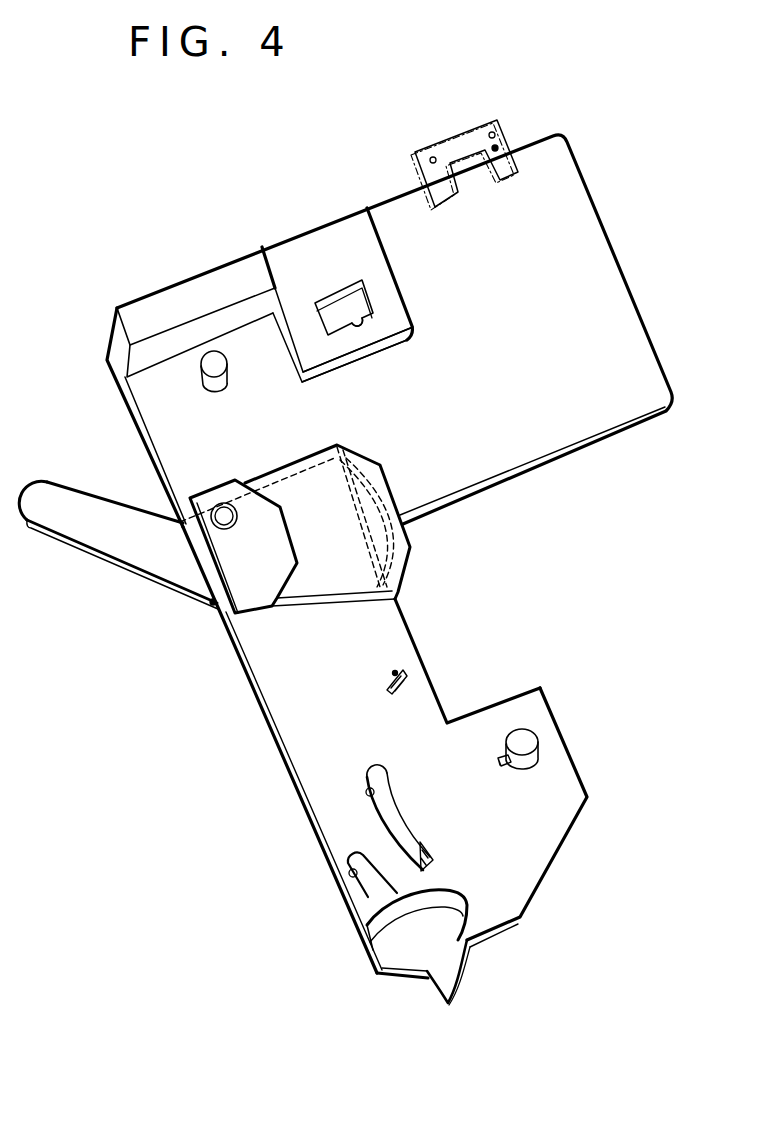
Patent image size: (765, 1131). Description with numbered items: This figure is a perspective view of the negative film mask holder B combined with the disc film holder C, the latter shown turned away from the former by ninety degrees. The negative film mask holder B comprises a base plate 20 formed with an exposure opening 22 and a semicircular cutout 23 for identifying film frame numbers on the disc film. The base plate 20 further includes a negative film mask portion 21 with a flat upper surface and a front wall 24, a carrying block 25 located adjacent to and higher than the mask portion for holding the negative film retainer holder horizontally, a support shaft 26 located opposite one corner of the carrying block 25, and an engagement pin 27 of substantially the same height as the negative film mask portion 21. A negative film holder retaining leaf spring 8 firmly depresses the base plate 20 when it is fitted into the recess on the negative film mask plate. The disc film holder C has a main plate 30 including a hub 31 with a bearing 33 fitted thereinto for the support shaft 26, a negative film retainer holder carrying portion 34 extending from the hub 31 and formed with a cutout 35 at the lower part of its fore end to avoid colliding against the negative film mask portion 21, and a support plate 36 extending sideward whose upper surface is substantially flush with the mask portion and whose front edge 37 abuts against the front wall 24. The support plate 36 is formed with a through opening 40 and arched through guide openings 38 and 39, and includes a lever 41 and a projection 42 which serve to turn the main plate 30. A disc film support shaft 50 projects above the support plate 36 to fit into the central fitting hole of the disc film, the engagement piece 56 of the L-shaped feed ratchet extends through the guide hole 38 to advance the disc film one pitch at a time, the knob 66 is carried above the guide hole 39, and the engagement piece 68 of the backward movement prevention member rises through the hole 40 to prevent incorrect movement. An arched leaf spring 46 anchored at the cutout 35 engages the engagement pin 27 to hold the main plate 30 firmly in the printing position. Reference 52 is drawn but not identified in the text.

The negative film holder retaining leaf spring 8 is at (475, 127).
The base plate 20 is at (600, 252).
The negative film mask holder B is at (392, 331).
The negative film mask portion 21 is at (358, 276).
The exposure opening 22 is at (345, 305).
The semicircular cutout 23 is at (360, 330).
The front wall 24 is at (400, 337).
The carrying block 25 is at (208, 273).
The support shaft 26 is at (222, 508).
The engagement pin 27 is at (205, 378).
The main plate 30 is at (394, 774).
The disc film holder C is at (394, 774).
The hub 31 is at (233, 550).
The bearing 33 is at (228, 529).
The negative film retainer holder carrying portion 34 is at (320, 503).
The cutout 35 is at (329, 468).
The support plate 36 is at (293, 733).
The front edge 37 is at (428, 670).
The arched through guide opening 38 is at (401, 811).
The arched through guide opening 39 is at (350, 878).
The through opening 40 is at (391, 690).
The lever 41 is at (113, 548).
The projection 42 is at (435, 987).
The spring member 46 is at (395, 551).
The disc film support shaft 50 is at (540, 742).
The tab 52 is at (497, 761).
The engagement piece 56 is at (433, 848).
The knob 66 is at (373, 945).
The engagement piece 68 is at (393, 667).